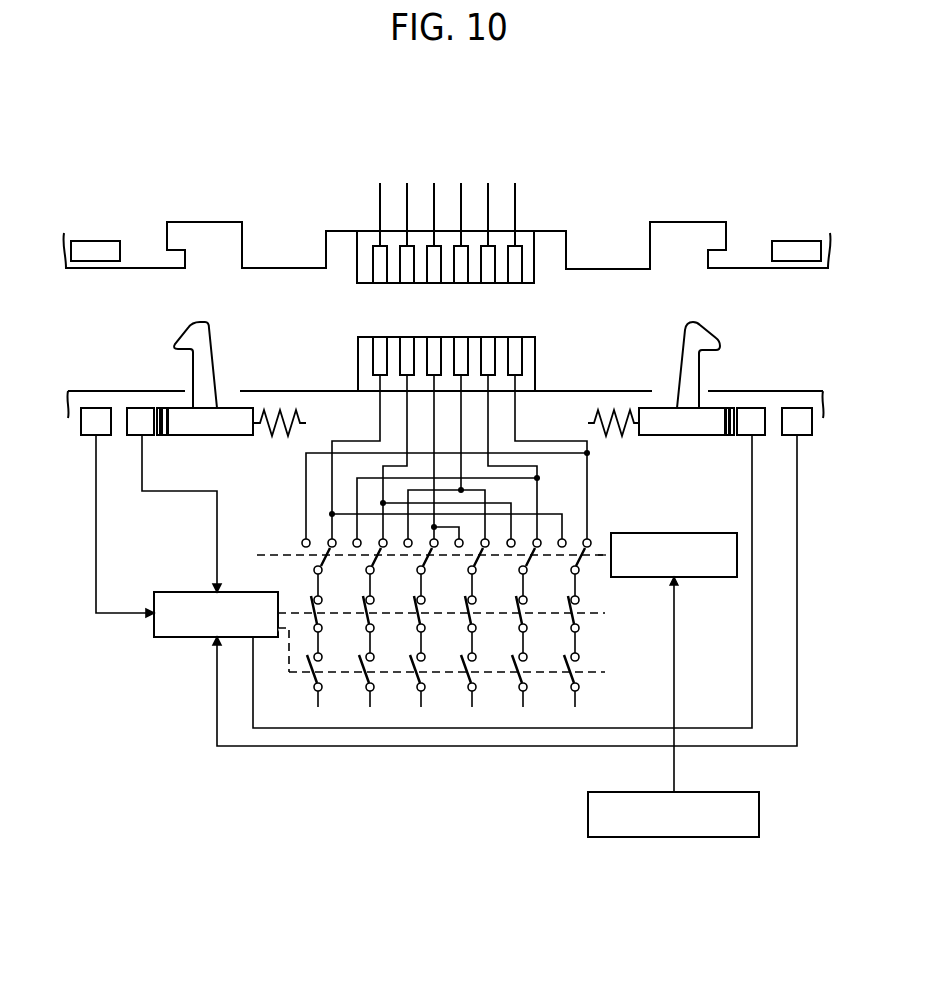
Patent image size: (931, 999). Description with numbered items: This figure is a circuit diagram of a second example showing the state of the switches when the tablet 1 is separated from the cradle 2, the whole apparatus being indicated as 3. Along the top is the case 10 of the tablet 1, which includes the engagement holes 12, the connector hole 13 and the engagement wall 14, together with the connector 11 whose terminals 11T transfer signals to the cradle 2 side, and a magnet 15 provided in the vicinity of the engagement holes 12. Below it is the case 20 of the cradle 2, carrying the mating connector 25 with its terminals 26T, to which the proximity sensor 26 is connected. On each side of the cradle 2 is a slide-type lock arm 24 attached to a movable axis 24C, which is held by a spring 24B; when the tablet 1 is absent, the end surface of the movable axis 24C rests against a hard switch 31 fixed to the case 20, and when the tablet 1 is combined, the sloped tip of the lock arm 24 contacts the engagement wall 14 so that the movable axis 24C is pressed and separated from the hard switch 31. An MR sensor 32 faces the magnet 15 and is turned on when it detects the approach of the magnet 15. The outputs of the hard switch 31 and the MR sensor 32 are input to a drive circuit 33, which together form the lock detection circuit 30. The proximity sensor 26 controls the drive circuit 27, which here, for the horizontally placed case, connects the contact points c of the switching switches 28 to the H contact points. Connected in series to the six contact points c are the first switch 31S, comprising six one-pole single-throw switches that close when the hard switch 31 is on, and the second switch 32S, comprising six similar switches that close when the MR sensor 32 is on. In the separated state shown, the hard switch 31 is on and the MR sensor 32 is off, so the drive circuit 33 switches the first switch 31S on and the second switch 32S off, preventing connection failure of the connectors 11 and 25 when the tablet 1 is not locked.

The tablet 1 is at (645, 162).
The cradle 2 is at (436, 776).
The electronic apparatus 3 is at (268, 142).
The case 10 is at (606, 248).
The connector 11 is at (535, 257).
The connector terminal 11T is at (378, 257).
The engagement hole 12 is at (685, 230).
The connector hole 13 is at (332, 248).
The engagement wall 14 is at (713, 257).
The magnet 15 is at (100, 238).
The case 20 is at (562, 398).
The lock arm 24 is at (212, 350).
The spring 24B is at (279, 408).
The movable axis 24C is at (228, 408).
The connector 25 is at (535, 357).
The proximity sensor 26 is at (588, 808).
The mating connector terminal 26T is at (378, 350).
The drive circuit 27 is at (705, 578).
The switching switches 28 is at (283, 539).
The lock detection circuit 30 is at (177, 692).
The hard switch 31 is at (138, 417).
The first switch 31S is at (597, 630).
The MR sensor 32 is at (93, 415).
The second switch 32S is at (602, 687).
The drive circuit 33 is at (173, 590).